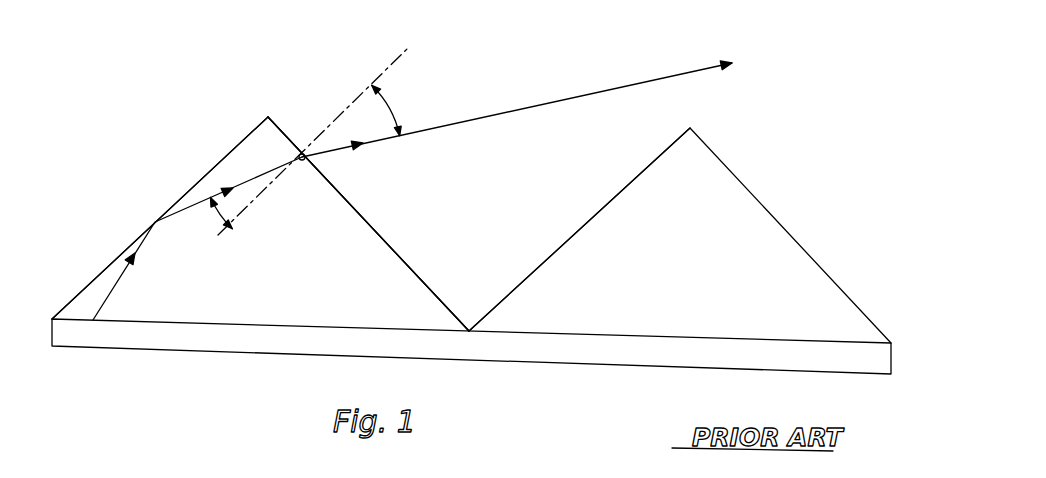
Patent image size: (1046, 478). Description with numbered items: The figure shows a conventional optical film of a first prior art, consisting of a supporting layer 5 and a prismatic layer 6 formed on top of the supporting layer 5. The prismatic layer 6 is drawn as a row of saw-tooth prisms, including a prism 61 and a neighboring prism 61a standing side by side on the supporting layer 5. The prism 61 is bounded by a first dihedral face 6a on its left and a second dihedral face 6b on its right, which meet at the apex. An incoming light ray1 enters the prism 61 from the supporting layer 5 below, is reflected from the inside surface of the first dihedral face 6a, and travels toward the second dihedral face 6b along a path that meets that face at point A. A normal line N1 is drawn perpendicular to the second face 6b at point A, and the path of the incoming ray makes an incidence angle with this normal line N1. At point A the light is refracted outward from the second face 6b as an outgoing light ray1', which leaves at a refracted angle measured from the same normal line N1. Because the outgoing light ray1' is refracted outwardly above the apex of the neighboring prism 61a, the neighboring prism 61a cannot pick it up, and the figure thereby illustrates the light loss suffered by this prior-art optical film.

The supporting layer 5 is at (738, 363).
The prismatic layer 6 is at (786, 270).
The first dihedral face 6a is at (220, 157).
The second dihedral face 6b is at (372, 222).
The prism 61 is at (400, 285).
The neighboring prism 61a is at (603, 228).
The incoming light ray ray1 is at (197, 273).
The outgoing light ray ray1' is at (517, 95).
The normal line N1 is at (389, 78).
The point A is at (302, 150).